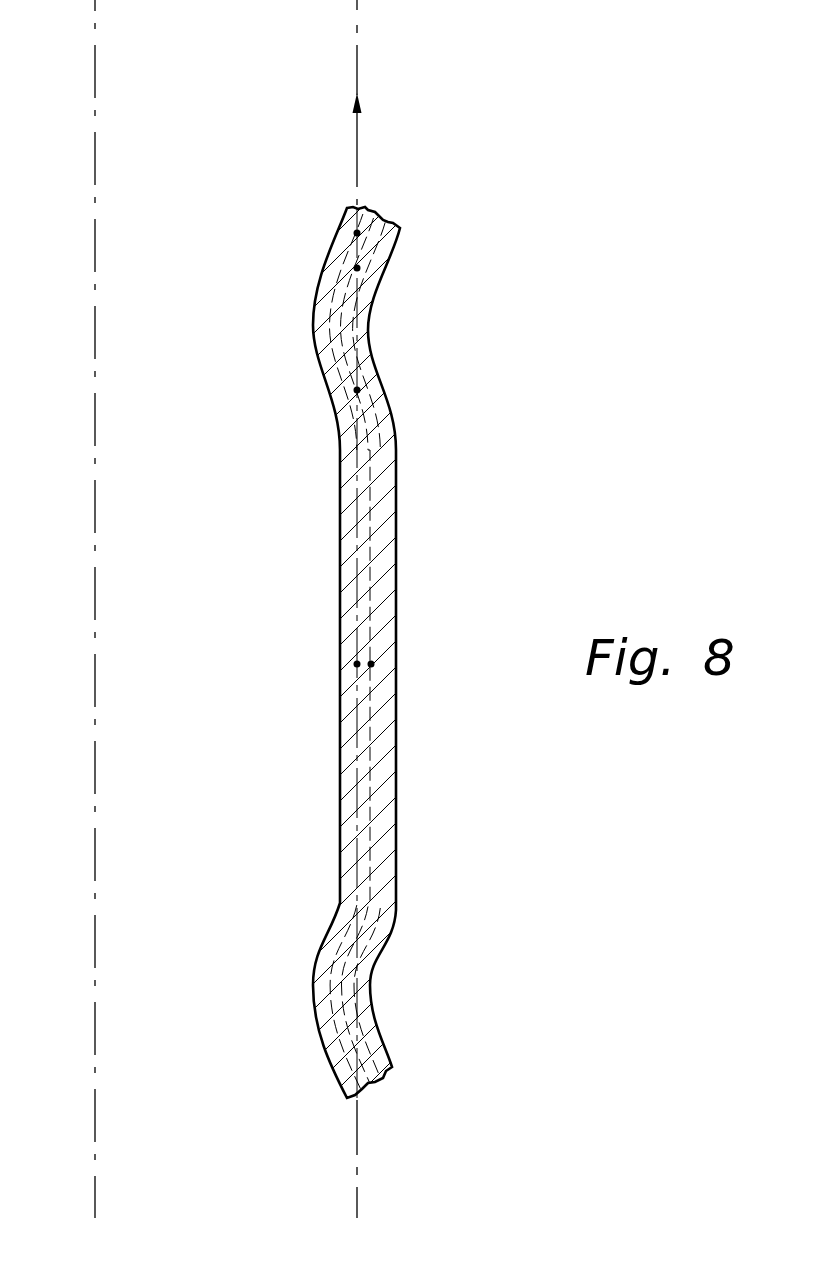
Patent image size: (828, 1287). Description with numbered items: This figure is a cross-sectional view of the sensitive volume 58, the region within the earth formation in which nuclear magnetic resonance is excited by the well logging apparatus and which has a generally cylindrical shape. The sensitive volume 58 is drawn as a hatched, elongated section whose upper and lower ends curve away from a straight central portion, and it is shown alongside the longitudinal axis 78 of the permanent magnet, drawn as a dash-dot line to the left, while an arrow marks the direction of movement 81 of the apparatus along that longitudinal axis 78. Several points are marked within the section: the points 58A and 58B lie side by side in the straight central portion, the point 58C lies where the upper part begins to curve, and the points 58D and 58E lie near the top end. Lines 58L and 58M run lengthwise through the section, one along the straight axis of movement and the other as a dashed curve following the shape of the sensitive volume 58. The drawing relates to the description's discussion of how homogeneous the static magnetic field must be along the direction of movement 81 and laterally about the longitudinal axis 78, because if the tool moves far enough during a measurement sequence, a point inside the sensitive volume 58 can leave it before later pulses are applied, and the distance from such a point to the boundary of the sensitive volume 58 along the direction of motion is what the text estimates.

The sensitive volume 58 is at (385, 873).
The beam point A 58A is at (357, 664).
The beam point B 58B is at (371, 664).
The beam point C 58C is at (357, 390).
The beam point D 58D is at (357, 268).
The beam point E 58E is at (357, 233).
The beam longitudinal axis line 58L is at (358, 515).
The beam mid-line 58M is at (372, 598).
The longitudinal axis 78 is at (95, 660).
The direction of movement 81 is at (357, 132).